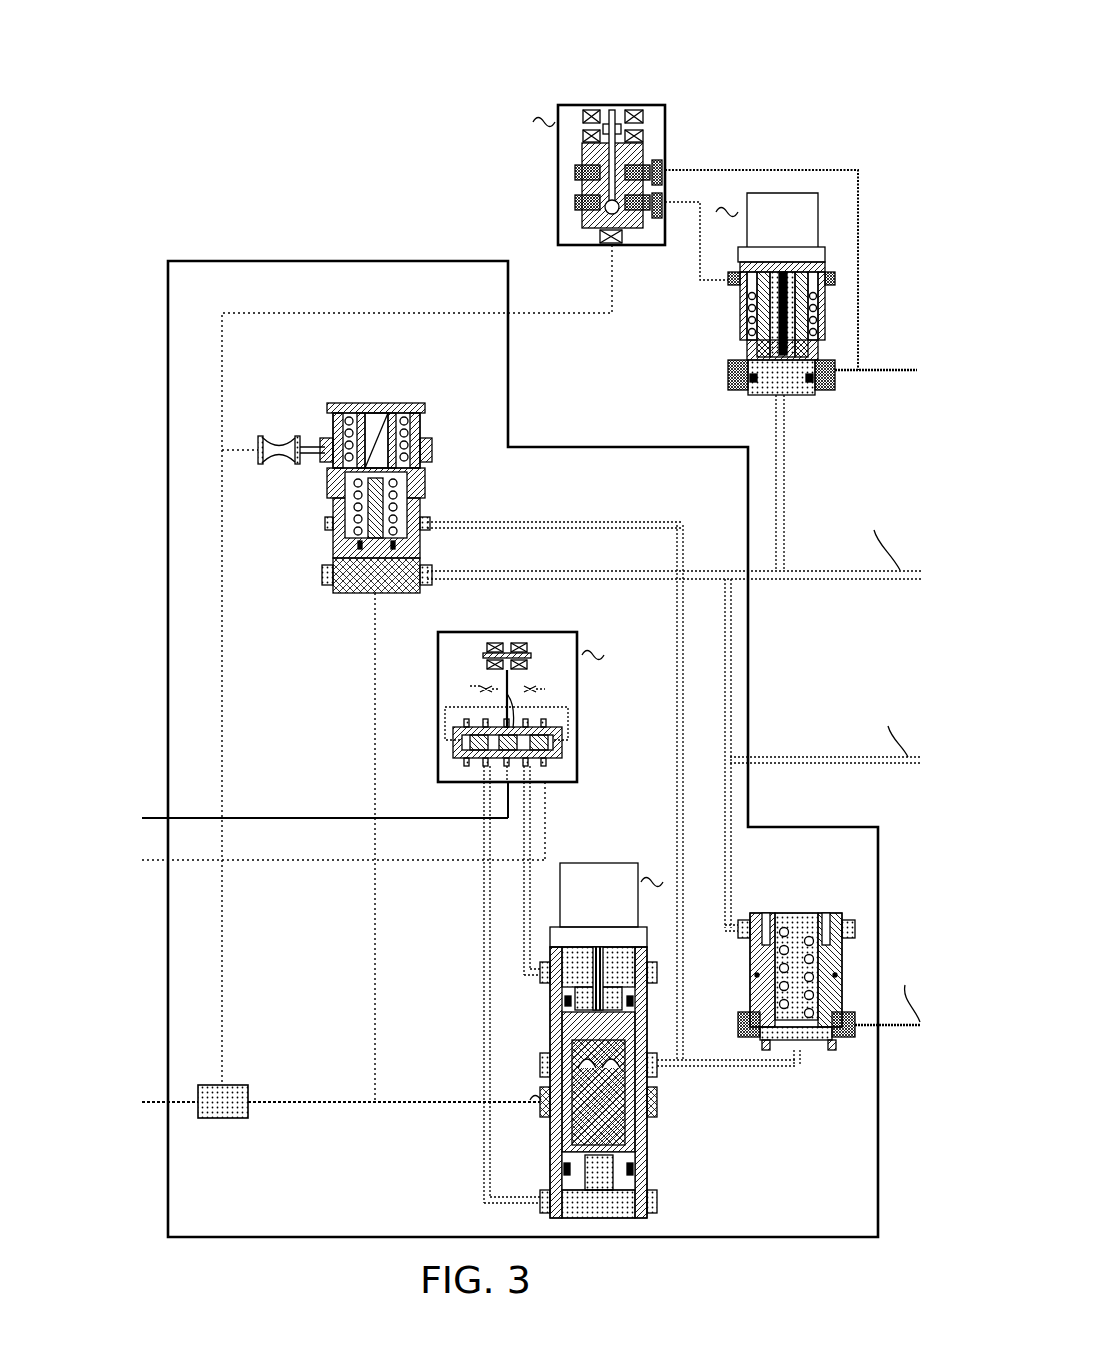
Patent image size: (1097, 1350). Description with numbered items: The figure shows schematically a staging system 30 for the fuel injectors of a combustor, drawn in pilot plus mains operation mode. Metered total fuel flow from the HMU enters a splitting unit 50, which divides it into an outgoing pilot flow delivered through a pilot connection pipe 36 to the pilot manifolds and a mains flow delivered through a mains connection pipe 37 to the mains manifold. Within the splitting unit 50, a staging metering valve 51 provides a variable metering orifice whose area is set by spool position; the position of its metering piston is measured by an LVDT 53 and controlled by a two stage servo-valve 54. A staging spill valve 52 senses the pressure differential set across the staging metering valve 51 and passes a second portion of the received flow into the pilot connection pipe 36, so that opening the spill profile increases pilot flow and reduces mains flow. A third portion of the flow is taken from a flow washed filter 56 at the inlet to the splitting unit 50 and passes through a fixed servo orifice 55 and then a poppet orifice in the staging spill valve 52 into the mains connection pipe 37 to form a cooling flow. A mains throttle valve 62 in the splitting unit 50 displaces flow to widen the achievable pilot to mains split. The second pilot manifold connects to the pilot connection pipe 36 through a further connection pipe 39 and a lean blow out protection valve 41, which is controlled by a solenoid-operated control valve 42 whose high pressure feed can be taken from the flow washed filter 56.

The staging system 30 is at (824, 96).
The splitting unit 50 is at (335, 261).
The solenoid-operated control valve 42 is at (614, 105).
The lean blow out protection valve 41 is at (734, 322).
The connection pipe 39 is at (915, 368).
The staging spill valve 52 is at (388, 403).
The fixed servo orifice 55 is at (278, 462).
The pilot connection pipe 36 is at (586, 580).
The two stage servo-valve 54 is at (578, 740).
The LVDT 53 is at (606, 905).
The staging metering valve 51 is at (642, 1170).
The mains throttle valve 62 is at (805, 913).
The mains connection pipe 37 is at (770, 1066).
The flow washed filter 56 is at (228, 1118).